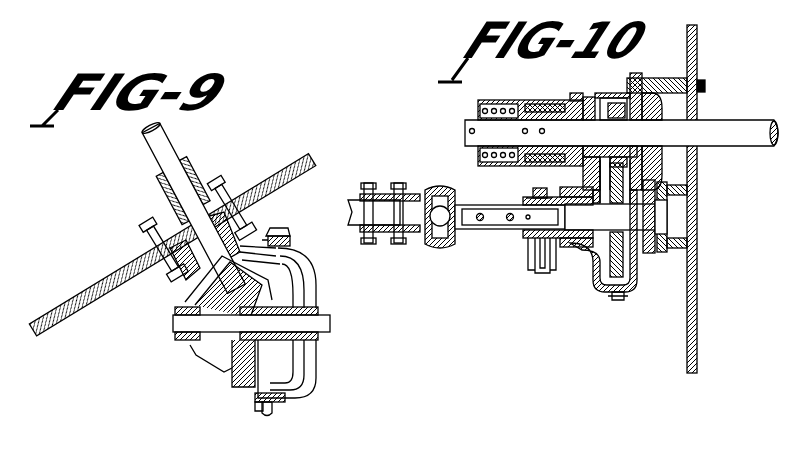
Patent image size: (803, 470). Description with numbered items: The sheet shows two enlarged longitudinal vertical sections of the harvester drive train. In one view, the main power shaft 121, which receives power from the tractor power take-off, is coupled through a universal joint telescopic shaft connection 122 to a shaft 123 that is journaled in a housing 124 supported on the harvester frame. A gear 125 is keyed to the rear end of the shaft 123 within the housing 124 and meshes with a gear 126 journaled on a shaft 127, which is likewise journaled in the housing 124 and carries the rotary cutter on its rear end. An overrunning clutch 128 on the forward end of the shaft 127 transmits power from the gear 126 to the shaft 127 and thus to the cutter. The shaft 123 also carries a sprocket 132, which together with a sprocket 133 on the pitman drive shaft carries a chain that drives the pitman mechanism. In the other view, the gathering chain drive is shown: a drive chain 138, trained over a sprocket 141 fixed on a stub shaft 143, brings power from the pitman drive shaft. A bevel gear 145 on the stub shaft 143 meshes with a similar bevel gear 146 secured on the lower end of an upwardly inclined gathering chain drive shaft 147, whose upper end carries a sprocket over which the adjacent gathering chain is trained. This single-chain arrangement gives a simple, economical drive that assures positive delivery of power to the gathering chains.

In FIG. 10, the main power shaft 121 is at (356, 210).
In FIG. 10, the universal joint telescopic shaft connection 122 is at (464, 238).
In FIG. 10, the shaft 123 is at (560, 258).
In FIG. 10, the housing 124 is at (598, 262).
In FIG. 10, the gear 125 is at (620, 300).
In FIG. 10, the gear 126 is at (616, 110).
In FIG. 10, the shaft 127 is at (716, 132).
In FIG. 10, the overrunning clutch 128 is at (497, 106).
In FIG. 10, the sprocket 132 is at (538, 188).
In FIG. 10, the sprocket 133 is at (528, 270).
In FIG. 9, the drive chain 138 is at (256, 404).
In FIG. 9, the sprocket 141 is at (270, 412).
In FIG. 9, the stub shaft 143 is at (320, 330).
In FIG. 9, the bevel gear 145 is at (222, 358).
In FIG. 9, the bevel gear 146 is at (280, 248).
In FIG. 9, the gathering chain drive shaft 147 is at (192, 150).